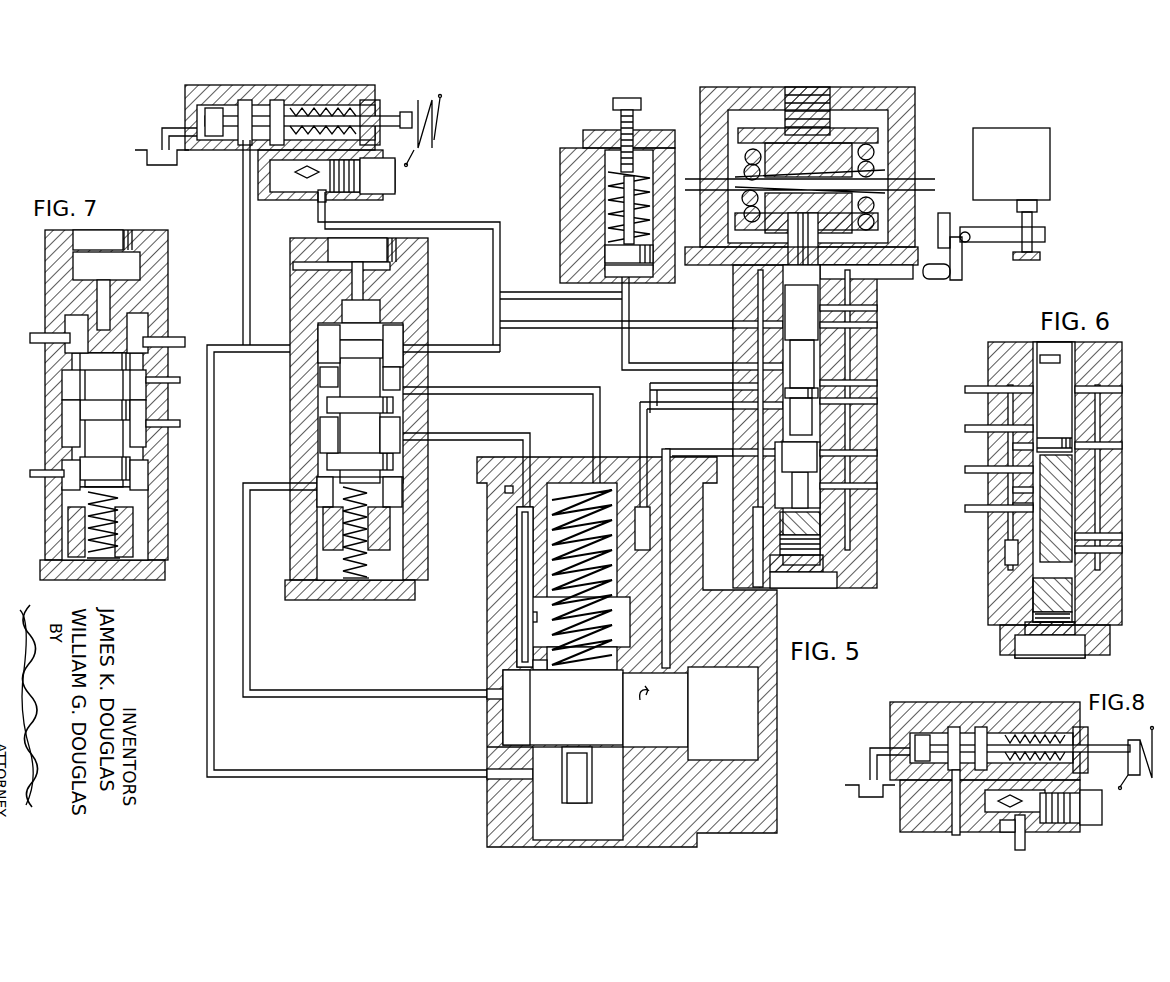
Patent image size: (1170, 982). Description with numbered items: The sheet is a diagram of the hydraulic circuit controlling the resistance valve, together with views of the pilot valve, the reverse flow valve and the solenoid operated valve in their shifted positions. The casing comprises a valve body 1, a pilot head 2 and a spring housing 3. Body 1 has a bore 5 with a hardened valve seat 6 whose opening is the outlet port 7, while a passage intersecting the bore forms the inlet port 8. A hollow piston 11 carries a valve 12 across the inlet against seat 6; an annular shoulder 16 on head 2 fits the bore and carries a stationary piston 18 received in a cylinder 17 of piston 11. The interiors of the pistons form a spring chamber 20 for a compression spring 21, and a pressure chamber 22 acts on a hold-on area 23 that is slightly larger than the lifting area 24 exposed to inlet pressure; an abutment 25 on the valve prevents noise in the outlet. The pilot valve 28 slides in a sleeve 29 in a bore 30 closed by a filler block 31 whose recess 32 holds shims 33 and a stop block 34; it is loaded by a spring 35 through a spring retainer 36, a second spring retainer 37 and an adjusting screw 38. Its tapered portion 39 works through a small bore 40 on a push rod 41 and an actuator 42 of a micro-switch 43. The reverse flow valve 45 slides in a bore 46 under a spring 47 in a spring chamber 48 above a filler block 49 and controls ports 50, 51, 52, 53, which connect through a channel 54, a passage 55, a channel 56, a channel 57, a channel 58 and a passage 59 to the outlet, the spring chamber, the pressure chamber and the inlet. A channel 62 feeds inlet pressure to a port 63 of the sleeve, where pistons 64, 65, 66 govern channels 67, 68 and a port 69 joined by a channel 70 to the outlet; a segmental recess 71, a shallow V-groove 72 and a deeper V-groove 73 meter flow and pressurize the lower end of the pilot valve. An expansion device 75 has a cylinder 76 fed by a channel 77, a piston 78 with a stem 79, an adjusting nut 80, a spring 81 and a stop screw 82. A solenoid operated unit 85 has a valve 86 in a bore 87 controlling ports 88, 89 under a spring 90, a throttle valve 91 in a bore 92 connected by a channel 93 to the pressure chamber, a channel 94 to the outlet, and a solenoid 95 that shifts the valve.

In FIG. 5, the valve body 1 is at (777, 822).
In FIG. 7, the pilot head 2 is at (168, 270).
In FIG. 5, the pilot head 2 is at (215, 178).
In FIG. 6, the pilot head 2 is at (1000, 634).
In FIG. 8, the pilot head 2 is at (915, 796).
In FIG. 7, the spring housing 3 is at (42, 568).
In FIG. 5, the spring housing 3 is at (908, 104).
In FIG. 5, the bore 5 is at (533, 663).
In FIG. 5, the valve seat 6 is at (487, 823).
In FIG. 5, the outlet port 7 is at (564, 830).
In FIG. 5, the inlet port 8 is at (724, 710).
In FIG. 5, the hollow piston 11 is at (516, 707).
In FIG. 5, the valve 12 is at (573, 726).
In FIG. 5, the annular shoulder 16 is at (505, 490).
In FIG. 5, the cylinder 17 is at (532, 640).
In FIG. 5, the stationary piston 18 is at (547, 566).
In FIG. 5, the spring chamber 20 is at (527, 617).
In FIG. 5, the compression spring 21 is at (550, 602).
In FIG. 5, the pressure chamber 22 is at (518, 528).
In FIG. 5, the hold-on area 23 is at (522, 545).
In FIG. 5, the lifting area 24 is at (655, 699).
In FIG. 5, the abutment 25 is at (587, 784).
In FIG. 5, the pilot valve 28 is at (812, 358).
In FIG. 6, the pilot valve 28 is at (1065, 407).
In FIG. 5, the sleeve 29 is at (850, 352).
In FIG. 6, the sleeve 29 is at (1105, 362).
In FIG. 5, the bore 30 is at (855, 384).
In FIG. 6, the bore 30 is at (1110, 445).
In FIG. 5, the filler block 31 is at (835, 588).
In FIG. 6, the filler block 31 is at (1052, 660).
In FIG. 5, the recess 32 is at (822, 546).
In FIG. 6, the recess 32 is at (1075, 612).
In FIG. 5, the shims 33 is at (805, 575).
In FIG. 6, the shims 33 is at (1050, 636).
In FIG. 5, the stop block 34 is at (822, 521).
In FIG. 6, the stop block 34 is at (1033, 595).
In FIG. 5, the compression spring 35 is at (875, 151).
In FIG. 5, the spring retainer 36 is at (735, 262).
In FIG. 5, the spring retainer 37 is at (880, 135).
In FIG. 5, the adjusting screw 38 is at (812, 92).
In FIG. 5, the tapered portion 39 is at (800, 252).
In FIG. 5, the small bore 40 is at (906, 280).
In FIG. 5, the push rod 41 is at (942, 281).
In FIG. 5, the actuator 42 is at (966, 262).
In FIG. 5, the micro-switch 43 is at (1018, 128).
In FIG. 7, the reverse flow valve 45 is at (112, 452).
In FIG. 5, the reverse flow valve 45 is at (367, 441).
In FIG. 7, the bore 46 is at (70, 500).
In FIG. 5, the bore 46 is at (345, 582).
In FIG. 7, the spring 47 is at (110, 566).
In FIG. 5, the spring 47 is at (352, 600).
In FIG. 7, the spring chamber 48 is at (133, 530).
In FIG. 5, the spring chamber 48 is at (323, 562).
In FIG. 7, the filler block 49 is at (105, 248).
In FIG. 5, the filler block 49 is at (358, 258).
In FIG. 7, the port 50 is at (140, 335).
In FIG. 5, the port 50 is at (397, 334).
In FIG. 7, the port 51 is at (70, 381).
In FIG. 5, the port 51 is at (322, 380).
In FIG. 7, the port 52 is at (70, 427).
In FIG. 5, the port 52 is at (322, 437).
In FIG. 7, the port 53 is at (140, 472).
In FIG. 5, the port 53 is at (320, 484).
In FIG. 7, the channel 54 is at (38, 336).
In FIG. 5, the channel 54 is at (234, 372).
In FIG. 7, the passage 55 is at (115, 276).
In FIG. 5, the passage 55 is at (365, 285).
In FIG. 7, the channel 56 is at (168, 380).
In FIG. 5, the channel 56 is at (545, 394).
In FIG. 7, the channel 57 is at (172, 423).
In FIG. 5, the channel 57 is at (478, 436).
In FIG. 7, the channel 58 is at (37, 477).
In FIG. 5, the channel 58 is at (342, 688).
In FIG. 7, the passage 59 is at (68, 520).
In FIG. 5, the passage 59 is at (323, 515).
In FIG. 5, the channel 62 is at (715, 452).
In FIG. 6, the channel 62 is at (990, 512).
In FIG. 5, the port 63 is at (855, 453).
In FIG. 6, the port 63 is at (1110, 536).
In FIG. 5, the piston 64 is at (855, 486).
In FIG. 6, the piston 64 is at (1110, 549).
In FIG. 5, the piston 65 is at (855, 401).
In FIG. 6, the piston 65 is at (1013, 446).
In FIG. 5, the piston 66 is at (855, 310).
In FIG. 6, the piston 66 is at (1045, 362).
In FIG. 5, the channel 67 is at (700, 410).
In FIG. 6, the channel 67 is at (985, 470).
In FIG. 5, the channel 68 is at (660, 386).
In FIG. 6, the channel 68 is at (971, 428).
In FIG. 5, the port 69 is at (855, 326).
In FIG. 6, the port 69 is at (1110, 390).
In FIG. 5, the channel 70 is at (673, 326).
In FIG. 6, the channel 70 is at (971, 388).
In FIG. 5, the segmental recess 71 is at (818, 440).
In FIG. 6, the segmental recess 71 is at (1013, 490).
In FIG. 5, the shallow V-groove 72 is at (816, 470).
In FIG. 6, the shallow V-groove 72 is at (1013, 506).
In FIG. 5, the deeper V-groove 73 is at (753, 512).
In FIG. 6, the deeper V-groove 73 is at (1008, 548).
In FIG. 5, the expansion device 75 is at (589, 122).
In FIG. 5, the cylinder 76 is at (605, 272).
In FIG. 5, the channel 77 is at (622, 350).
In FIG. 5, the piston 78 is at (630, 261).
In FIG. 5, the stem 79 is at (624, 238).
In FIG. 5, the adjusting nut 80 is at (646, 134).
In FIG. 5, the spring 81 is at (610, 212).
In FIG. 5, the stop screw 82 is at (640, 104).
In FIG. 5, the solenoid operated valve unit 85 is at (175, 85).
In FIG. 8, the solenoid operated valve unit 85 is at (873, 739).
In FIG. 5, the valve 86 is at (205, 115).
In FIG. 8, the valve 86 is at (925, 733).
In FIG. 5, the bore 87 is at (366, 100).
In FIG. 8, the bore 87 is at (925, 722).
In FIG. 5, the port 88 is at (245, 100).
In FIG. 8, the port 88 is at (958, 727).
In FIG. 5, the port 89 is at (277, 100).
In FIG. 8, the port 89 is at (982, 727).
In FIG. 5, the spring 90 is at (322, 100).
In FIG. 8, the spring 90 is at (1042, 733).
In FIG. 5, the throttle valve 91 is at (396, 177).
In FIG. 8, the throttle valve 91 is at (1100, 812).
In FIG. 5, the bore 92 is at (318, 198).
In FIG. 8, the bore 92 is at (1025, 838).
In FIG. 5, the channel 93 is at (464, 222).
In FIG. 8, the channel 93 is at (1016, 840).
In FIG. 5, the channel 94 is at (243, 213).
In FIG. 8, the channel 94 is at (955, 830).
In FIG. 5, the solenoid 95 is at (438, 94).
In FIG. 8, the solenoid 95 is at (1146, 780).